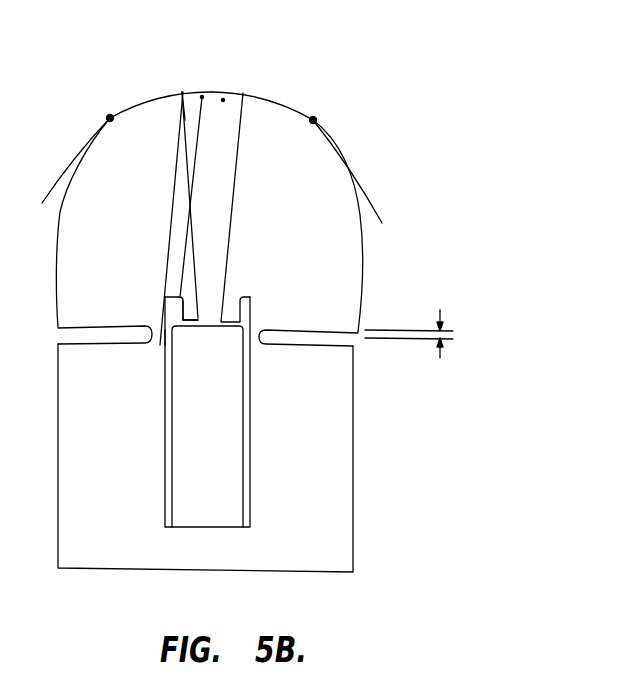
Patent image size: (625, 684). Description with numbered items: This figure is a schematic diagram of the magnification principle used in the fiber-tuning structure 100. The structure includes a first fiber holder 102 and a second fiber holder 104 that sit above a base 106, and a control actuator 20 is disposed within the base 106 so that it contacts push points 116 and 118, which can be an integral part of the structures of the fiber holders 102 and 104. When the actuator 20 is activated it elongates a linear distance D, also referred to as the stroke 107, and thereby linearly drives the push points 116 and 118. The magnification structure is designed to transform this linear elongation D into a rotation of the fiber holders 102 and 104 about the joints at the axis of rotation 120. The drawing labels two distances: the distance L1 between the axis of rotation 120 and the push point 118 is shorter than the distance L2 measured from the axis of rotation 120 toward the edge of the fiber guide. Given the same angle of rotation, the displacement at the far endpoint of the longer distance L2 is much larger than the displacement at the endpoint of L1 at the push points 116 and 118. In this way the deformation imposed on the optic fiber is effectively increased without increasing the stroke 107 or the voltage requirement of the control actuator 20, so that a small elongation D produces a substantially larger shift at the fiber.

The optical element assembly 100 is at (336, 54).
The first fiber holder 102 is at (125, 155).
The second fiber holder 104 is at (317, 163).
The base 106 is at (340, 487).
The stroke 107 is at (415, 330).
The push point 116 is at (225, 313).
The push point 118 is at (190, 307).
The axis of rotation 120 is at (163, 337).
The control actuator 20 is at (240, 487).
The distance L1 is at (167, 312).
The distance L2 is at (177, 223).
The linear elongation D is at (453, 339).